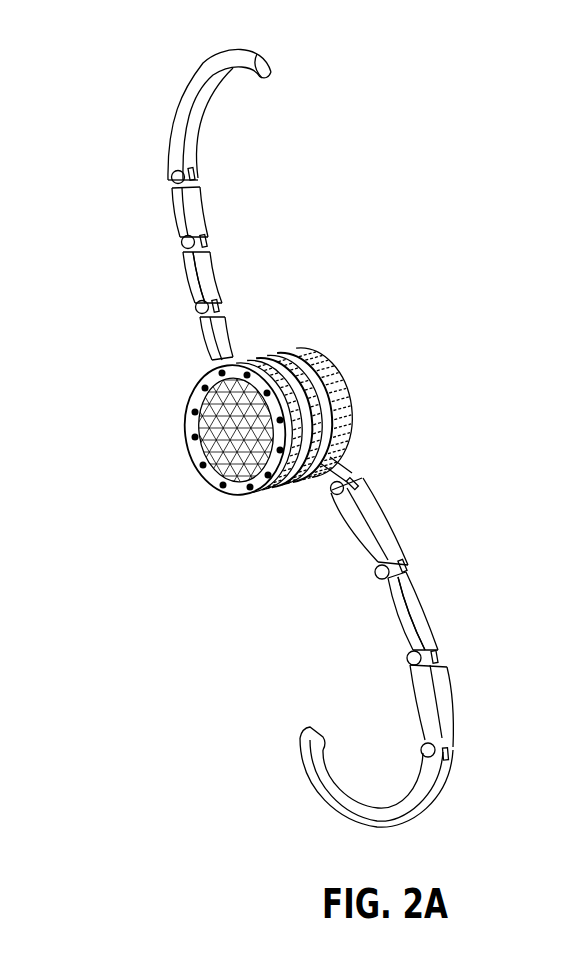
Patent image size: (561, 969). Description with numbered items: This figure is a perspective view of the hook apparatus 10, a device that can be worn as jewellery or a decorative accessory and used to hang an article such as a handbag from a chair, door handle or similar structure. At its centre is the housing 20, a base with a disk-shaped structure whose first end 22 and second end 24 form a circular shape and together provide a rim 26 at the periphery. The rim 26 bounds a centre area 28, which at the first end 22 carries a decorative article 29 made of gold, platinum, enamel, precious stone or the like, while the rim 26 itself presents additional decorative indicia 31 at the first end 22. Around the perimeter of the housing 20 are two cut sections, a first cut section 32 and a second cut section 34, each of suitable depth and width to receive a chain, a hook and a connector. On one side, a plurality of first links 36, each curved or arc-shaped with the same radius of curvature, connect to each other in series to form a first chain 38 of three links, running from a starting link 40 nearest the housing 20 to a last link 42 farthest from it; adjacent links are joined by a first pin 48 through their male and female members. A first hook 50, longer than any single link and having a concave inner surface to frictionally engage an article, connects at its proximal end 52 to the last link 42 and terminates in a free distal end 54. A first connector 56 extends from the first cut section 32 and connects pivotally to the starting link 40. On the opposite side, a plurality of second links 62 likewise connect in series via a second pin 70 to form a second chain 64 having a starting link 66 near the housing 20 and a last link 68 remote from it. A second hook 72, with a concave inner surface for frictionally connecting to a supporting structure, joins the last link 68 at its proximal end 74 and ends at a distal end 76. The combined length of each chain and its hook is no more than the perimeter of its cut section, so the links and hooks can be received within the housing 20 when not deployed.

The hook apparatus 10 is at (441, 130).
The housing 20 is at (352, 418).
The first end 22 is at (166, 451).
The second end 24 is at (274, 432).
The rim 26 is at (240, 492).
The centre area 28 is at (250, 385).
The decorative article 29 is at (213, 410).
The decorative indicia 31 is at (223, 485).
The first cut section 32 is at (313, 372).
The second cut section 34 is at (287, 378).
The plurality of first links 36 is at (422, 605).
The first chain 38 is at (407, 627).
The starting link 40 is at (387, 530).
The last link 42 is at (447, 720).
The first pin 48 is at (376, 574).
The first hook 50 is at (420, 810).
The proximal end 52 is at (435, 770).
The distal end 54 is at (325, 745).
The first connector 56 is at (335, 470).
The plurality of second links 62 is at (190, 282).
The second chain 64 is at (203, 263).
The starting link 66 is at (200, 340).
The last link 68 is at (190, 215).
The second pin 70 is at (182, 240).
The second hook 72 is at (208, 87).
The proximal end 74 is at (190, 157).
The distal end 76 is at (268, 58).